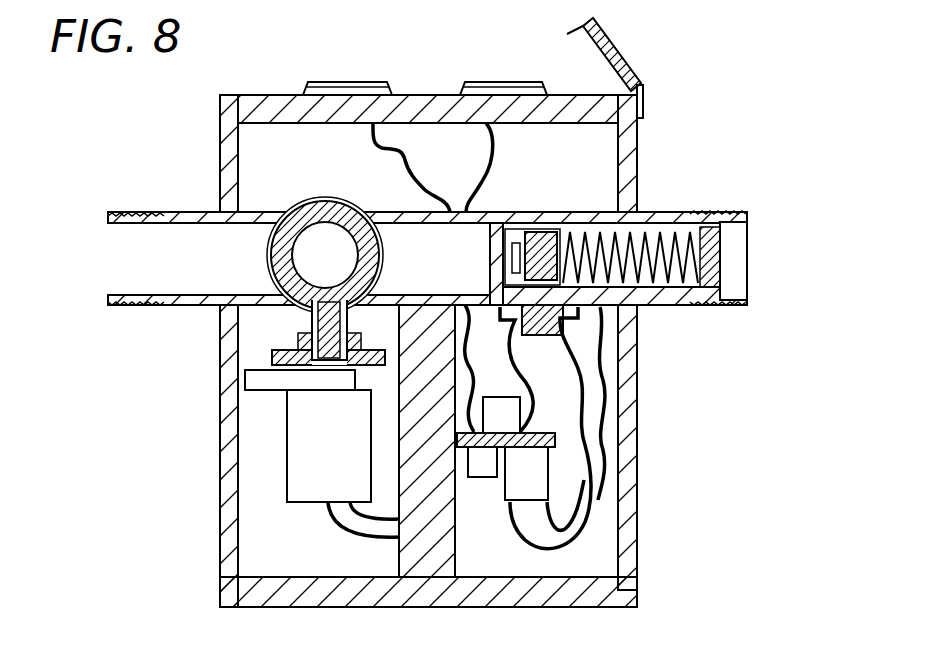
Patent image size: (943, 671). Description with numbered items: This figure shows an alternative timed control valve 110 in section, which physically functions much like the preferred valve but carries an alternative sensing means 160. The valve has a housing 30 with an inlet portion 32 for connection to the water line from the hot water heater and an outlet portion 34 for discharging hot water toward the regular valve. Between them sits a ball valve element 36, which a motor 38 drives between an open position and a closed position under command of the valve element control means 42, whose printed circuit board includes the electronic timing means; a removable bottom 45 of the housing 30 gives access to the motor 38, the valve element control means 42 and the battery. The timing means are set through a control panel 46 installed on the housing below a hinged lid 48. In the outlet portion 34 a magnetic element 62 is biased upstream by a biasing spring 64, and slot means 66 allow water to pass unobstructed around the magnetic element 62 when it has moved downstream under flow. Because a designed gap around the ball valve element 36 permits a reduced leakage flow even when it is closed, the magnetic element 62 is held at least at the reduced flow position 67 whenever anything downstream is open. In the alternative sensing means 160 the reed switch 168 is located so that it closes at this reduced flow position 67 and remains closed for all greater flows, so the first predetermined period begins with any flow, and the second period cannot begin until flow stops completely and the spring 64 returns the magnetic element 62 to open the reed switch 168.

The housing 30 is at (637, 535).
The inlet portion 32 is at (200, 308).
The outlet portion 34 is at (739, 300).
The ball valve element 36 is at (296, 188).
The motor 38 is at (305, 490).
The valve element control means 42 is at (556, 470).
The removable bottom 45 is at (466, 606).
The control panel 46 is at (432, 82).
The hinged lid 48 is at (618, 54).
The magnetic element 62 is at (541, 236).
The biasing spring 64 is at (645, 283).
The slot means 66 is at (666, 212).
The reduced flow position 67 is at (522, 198).
The alternative valve 110 is at (286, 80).
The alternative sensing means 160 is at (652, 362).
The reed switch 168 is at (553, 335).